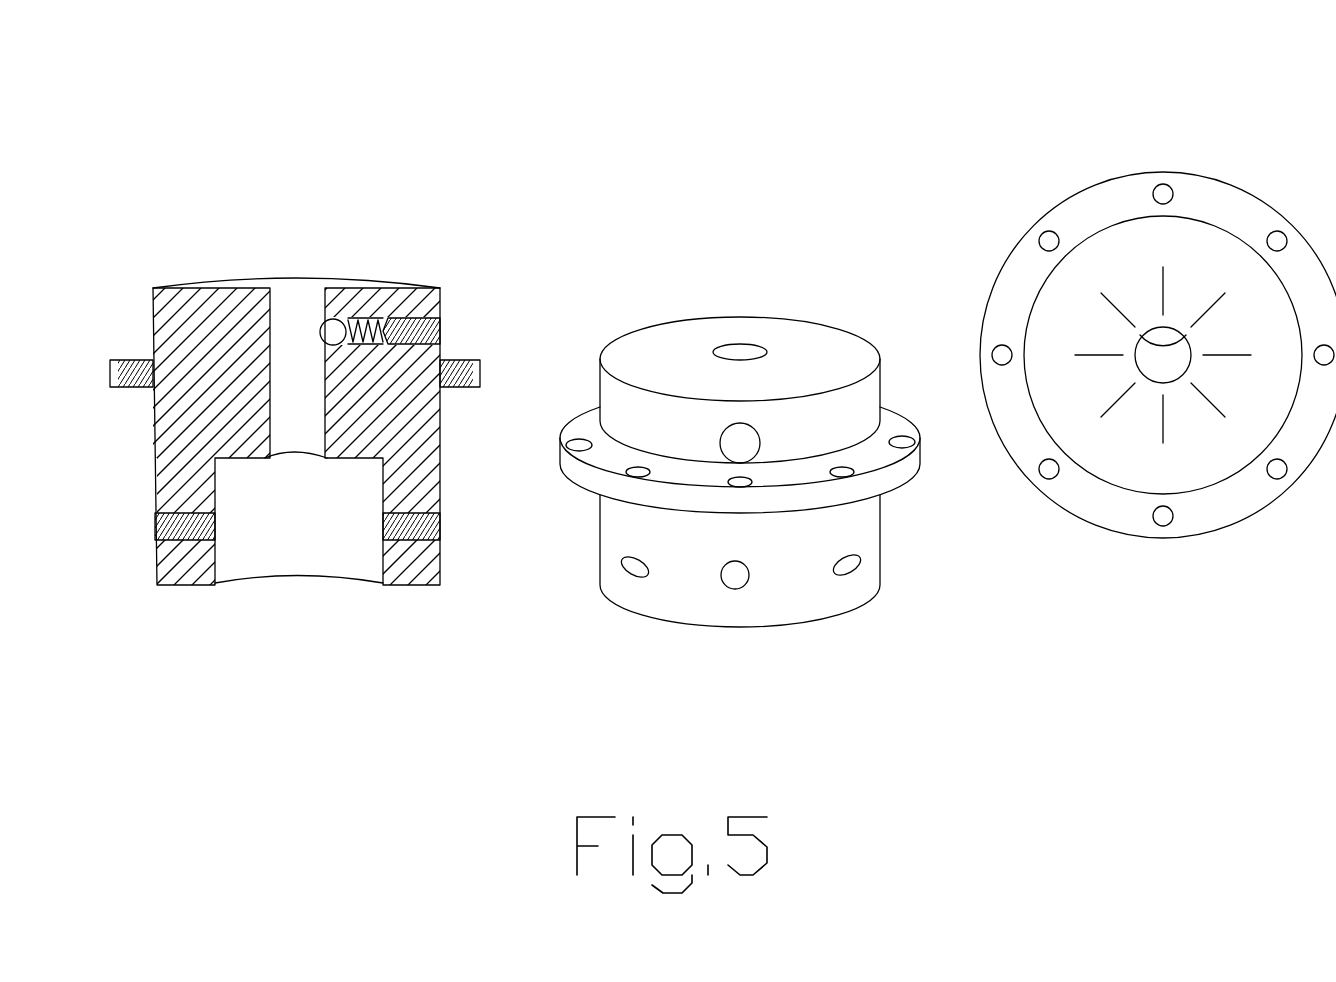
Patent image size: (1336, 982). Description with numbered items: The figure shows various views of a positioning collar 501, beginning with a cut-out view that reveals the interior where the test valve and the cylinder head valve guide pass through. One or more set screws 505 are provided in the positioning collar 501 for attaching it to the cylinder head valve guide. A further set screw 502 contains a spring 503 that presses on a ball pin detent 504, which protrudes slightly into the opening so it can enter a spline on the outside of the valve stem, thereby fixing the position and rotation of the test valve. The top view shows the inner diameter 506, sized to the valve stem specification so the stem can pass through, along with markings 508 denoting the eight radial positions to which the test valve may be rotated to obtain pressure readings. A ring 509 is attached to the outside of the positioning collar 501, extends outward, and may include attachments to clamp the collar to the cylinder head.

The positioning collar 501 is at (413, 603).
The set screw 502 is at (440, 322).
The spring 503 is at (365, 322).
The ball pin detent 504 is at (317, 322).
The set screws 505 is at (142, 528).
The inner diameter 506 is at (1148, 360).
The markings 508 is at (1172, 225).
The ring 509 is at (120, 352).